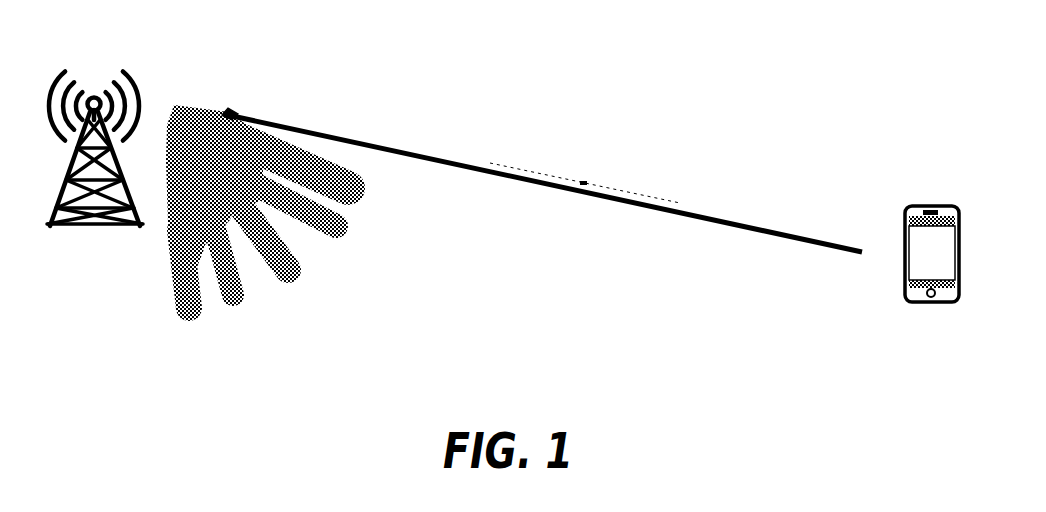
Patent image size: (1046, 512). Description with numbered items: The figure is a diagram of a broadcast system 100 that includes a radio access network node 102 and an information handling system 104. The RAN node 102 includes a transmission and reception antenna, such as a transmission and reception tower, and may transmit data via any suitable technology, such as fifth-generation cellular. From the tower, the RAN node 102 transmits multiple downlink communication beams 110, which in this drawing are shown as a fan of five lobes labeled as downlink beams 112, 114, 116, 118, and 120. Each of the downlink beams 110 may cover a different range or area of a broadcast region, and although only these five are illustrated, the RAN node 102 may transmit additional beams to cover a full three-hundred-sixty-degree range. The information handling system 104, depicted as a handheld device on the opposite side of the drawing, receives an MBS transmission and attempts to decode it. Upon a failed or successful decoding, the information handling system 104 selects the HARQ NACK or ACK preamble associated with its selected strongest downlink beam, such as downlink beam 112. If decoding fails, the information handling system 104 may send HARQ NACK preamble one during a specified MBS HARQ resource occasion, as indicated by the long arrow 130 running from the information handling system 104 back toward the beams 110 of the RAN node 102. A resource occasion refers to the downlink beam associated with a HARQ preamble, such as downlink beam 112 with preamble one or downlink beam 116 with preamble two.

The broadcast system 100 is at (737, 99).
The radio access network node 102 is at (95, 74).
The information handling system 104 is at (945, 205).
The downlink communication beams 110 is at (284, 113).
The downlink beam 112 is at (352, 183).
The downlink beam 114 is at (323, 230).
The downlink beam 116 is at (287, 270).
The downlink beam 118 is at (237, 285).
The downlink beam 120 is at (187, 300).
The arrow 130 is at (700, 215).